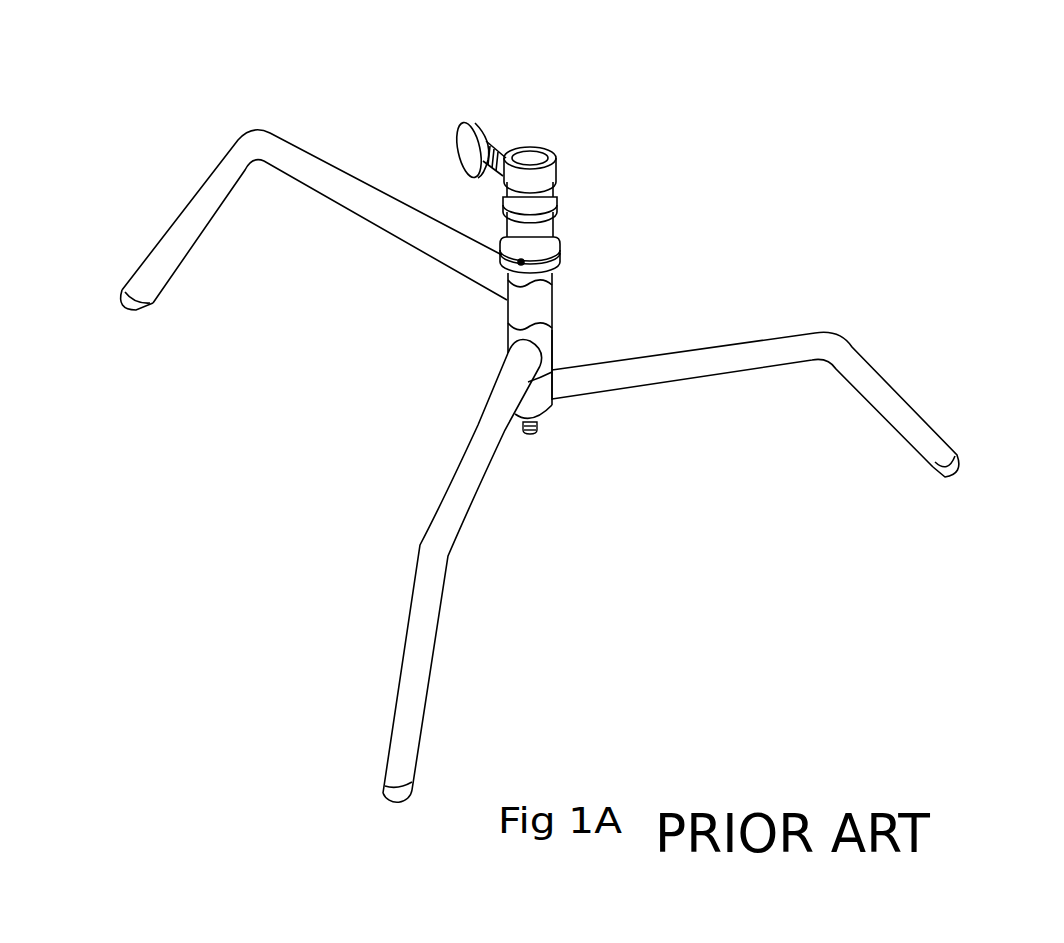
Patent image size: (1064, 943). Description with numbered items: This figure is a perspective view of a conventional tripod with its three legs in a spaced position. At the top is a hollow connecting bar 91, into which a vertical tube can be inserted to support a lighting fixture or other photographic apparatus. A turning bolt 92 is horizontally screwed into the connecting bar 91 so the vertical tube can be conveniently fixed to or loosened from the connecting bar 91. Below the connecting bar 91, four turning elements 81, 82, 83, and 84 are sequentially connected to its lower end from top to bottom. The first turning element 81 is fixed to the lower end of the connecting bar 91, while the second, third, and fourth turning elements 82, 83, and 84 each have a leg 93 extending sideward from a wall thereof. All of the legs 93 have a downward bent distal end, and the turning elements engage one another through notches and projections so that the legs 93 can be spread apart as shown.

The first turning element 81 is at (552, 276).
The second turning element 82 is at (513, 316).
The third turning element 83 is at (552, 336).
The fourth turning element 84 is at (532, 411).
The connecting bar 91 is at (558, 160).
The turning bolt 92 is at (460, 147).
The leg 93 is at (175, 238).